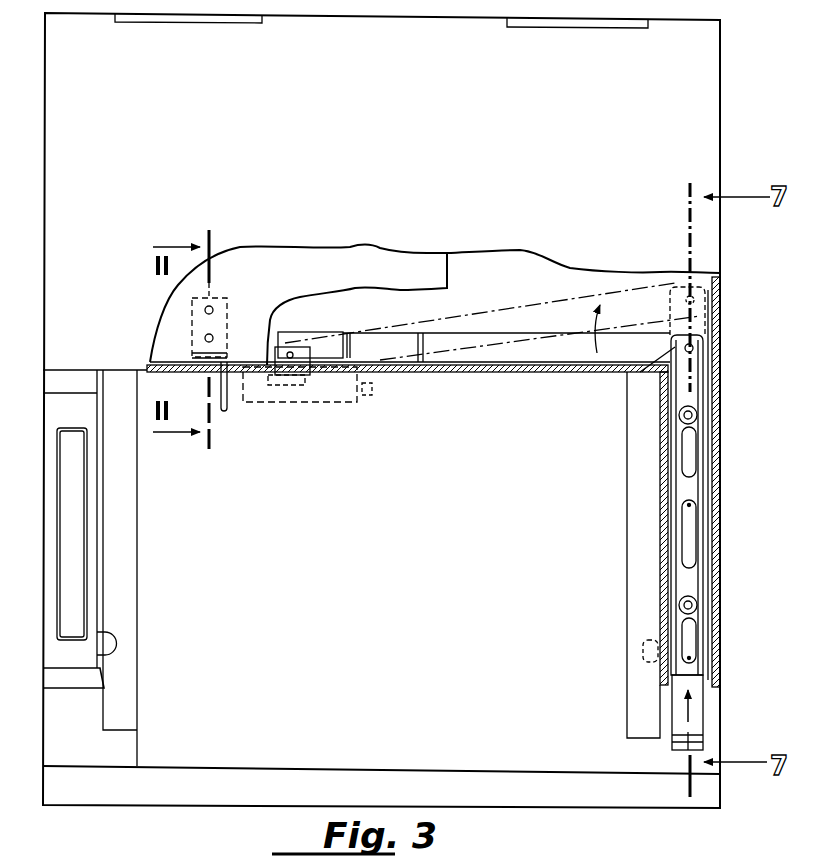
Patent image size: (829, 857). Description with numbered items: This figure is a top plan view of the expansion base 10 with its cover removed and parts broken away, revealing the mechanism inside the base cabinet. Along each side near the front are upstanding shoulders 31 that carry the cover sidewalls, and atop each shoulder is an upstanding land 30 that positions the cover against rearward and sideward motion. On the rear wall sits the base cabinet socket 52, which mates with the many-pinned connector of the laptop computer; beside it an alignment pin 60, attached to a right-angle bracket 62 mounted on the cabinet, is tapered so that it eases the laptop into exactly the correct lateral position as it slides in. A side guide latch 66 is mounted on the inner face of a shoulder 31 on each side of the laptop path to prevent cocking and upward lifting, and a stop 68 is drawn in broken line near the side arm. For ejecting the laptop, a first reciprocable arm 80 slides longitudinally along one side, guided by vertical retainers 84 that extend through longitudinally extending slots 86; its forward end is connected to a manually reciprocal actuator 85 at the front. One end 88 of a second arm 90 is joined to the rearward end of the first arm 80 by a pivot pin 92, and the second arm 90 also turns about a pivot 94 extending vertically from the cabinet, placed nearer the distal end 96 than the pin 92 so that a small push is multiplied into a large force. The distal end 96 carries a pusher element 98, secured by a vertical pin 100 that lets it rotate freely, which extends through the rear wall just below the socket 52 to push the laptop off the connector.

The appliance cabinet 10 is at (733, 118).
The upstanding land 30 is at (72, 600).
The upstanding shoulder 31 is at (716, 647).
The base cabinet socket 52 is at (300, 405).
The alignment pin 60 is at (226, 410).
The right-angle bracket 62 is at (228, 303).
The side guide latch 66 is at (110, 643).
The stop 68 is at (640, 650).
The first reciprocable arm 80 is at (698, 487).
The vertical retainer 84 is at (697, 415).
The manually reciprocal actuator 85 is at (702, 700).
The longitudinally extending slot 86 is at (686, 627).
The end of second arm 88 is at (665, 342).
The second arm 90 is at (545, 348).
The pivot pin 92 is at (625, 378).
The pivot 94 is at (370, 395).
The distal end of arm 96 is at (292, 333).
The pusher element 98 is at (300, 365).
The vertical pin 100 is at (289, 358).